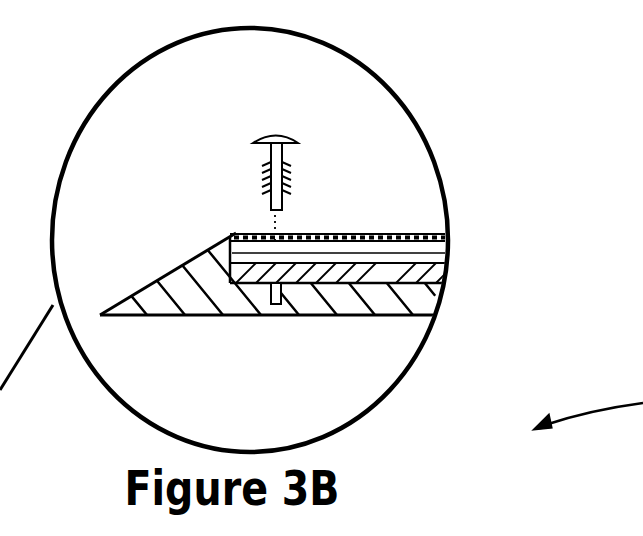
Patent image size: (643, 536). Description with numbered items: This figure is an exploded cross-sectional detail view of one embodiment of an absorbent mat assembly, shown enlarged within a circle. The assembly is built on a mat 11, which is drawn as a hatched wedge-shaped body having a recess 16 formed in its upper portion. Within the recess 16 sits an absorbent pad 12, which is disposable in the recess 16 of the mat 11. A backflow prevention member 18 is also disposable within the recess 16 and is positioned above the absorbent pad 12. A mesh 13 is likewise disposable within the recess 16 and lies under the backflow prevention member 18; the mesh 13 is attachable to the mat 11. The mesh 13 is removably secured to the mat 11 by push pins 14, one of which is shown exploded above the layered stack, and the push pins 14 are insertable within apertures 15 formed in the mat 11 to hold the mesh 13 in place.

The mat 11 is at (120, 302).
The absorbent pad 12 is at (397, 272).
The mesh 13 is at (360, 237).
The push pins 14 is at (263, 134).
The apertures 15 is at (270, 292).
The recess 16 is at (440, 308).
The backflow prevention member 18 is at (383, 237).